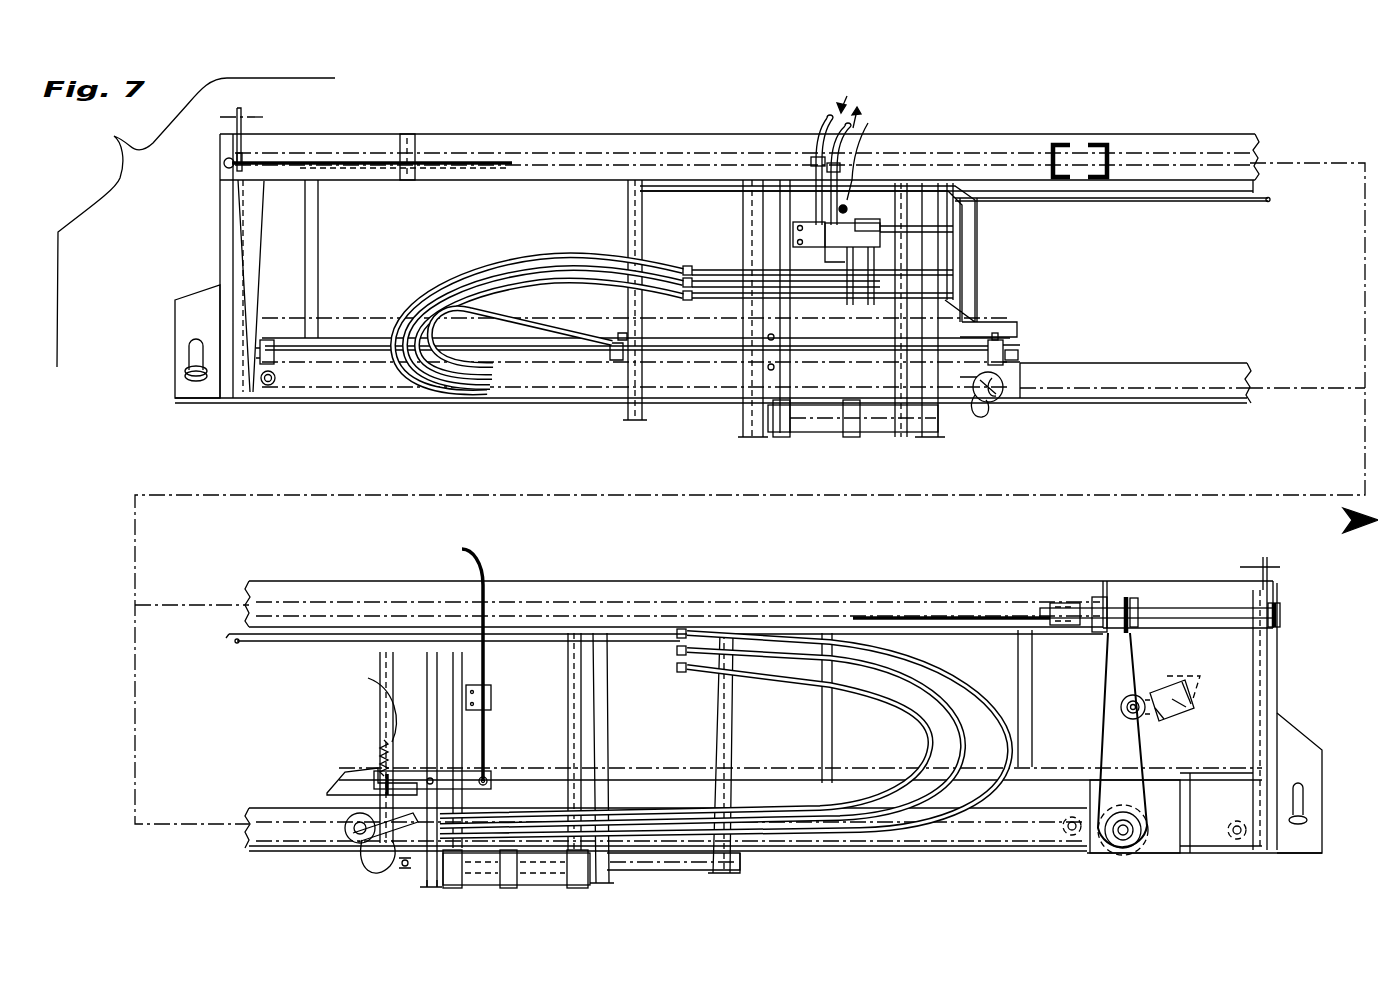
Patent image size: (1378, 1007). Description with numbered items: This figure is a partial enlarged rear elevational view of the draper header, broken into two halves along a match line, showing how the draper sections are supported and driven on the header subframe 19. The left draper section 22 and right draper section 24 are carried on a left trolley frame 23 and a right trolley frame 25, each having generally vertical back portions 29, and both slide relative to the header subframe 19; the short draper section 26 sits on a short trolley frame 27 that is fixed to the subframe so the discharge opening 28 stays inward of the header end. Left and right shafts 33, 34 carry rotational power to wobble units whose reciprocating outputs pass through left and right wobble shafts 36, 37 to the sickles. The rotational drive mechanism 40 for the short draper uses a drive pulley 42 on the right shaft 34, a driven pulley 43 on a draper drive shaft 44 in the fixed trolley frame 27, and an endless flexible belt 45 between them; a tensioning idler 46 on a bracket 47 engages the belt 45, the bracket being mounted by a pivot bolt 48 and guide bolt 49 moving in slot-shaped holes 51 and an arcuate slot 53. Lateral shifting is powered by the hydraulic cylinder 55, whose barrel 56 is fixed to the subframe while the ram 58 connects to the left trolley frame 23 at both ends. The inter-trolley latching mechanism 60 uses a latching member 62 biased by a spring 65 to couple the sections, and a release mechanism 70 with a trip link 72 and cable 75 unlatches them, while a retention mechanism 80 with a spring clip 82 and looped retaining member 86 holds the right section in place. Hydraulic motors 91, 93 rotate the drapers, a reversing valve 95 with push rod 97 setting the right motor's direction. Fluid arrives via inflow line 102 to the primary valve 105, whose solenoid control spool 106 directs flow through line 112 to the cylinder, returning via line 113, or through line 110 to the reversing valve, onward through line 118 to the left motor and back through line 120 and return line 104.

The header subframe 19 is at (1145, 363).
The left draper section 22 is at (998, 253).
The left trolley frame 23 is at (315, 218).
The right draper section 24 is at (310, 697).
The right trolley frame 25 is at (1026, 640).
The short draper section 26 is at (1174, 565).
The short trolley frame 27 is at (1215, 855).
The discharge opening 28 is at (702, 505).
The vertical back portions 29 is at (762, 486).
The left shaft 33 is at (275, 160).
The right shaft 34 is at (1160, 600).
The left wobble shaft 36 is at (192, 340).
The right wobble shaft 37 is at (1302, 797).
The rotational drive mechanism 40 is at (1042, 880).
The drive pulley 42 is at (1123, 597).
The driven pulley 43 is at (1100, 855).
The draper drive shaft 44 is at (1123, 848).
The endless flexible belt 45 is at (1132, 668).
The tensioning idler 46 is at (1134, 720).
The bracket 47 is at (1162, 692).
The pivot bolt 48 is at (1164, 720).
The guide bolt 49 is at (1188, 710).
The slot-shaped holes 51 is at (1192, 680).
The arcuate slot 53 is at (1197, 695).
The hydraulic cylinder 55 is at (608, 360).
The barrel 56 is at (730, 355).
The ram 58 is at (1018, 350).
The inter-trolley latching mechanism 60 is at (218, 770).
The latching member 62 is at (340, 788).
The spring 65 is at (382, 748).
The release mechanism 70 is at (491, 768).
The trip link 72 is at (486, 790).
The cable 75 is at (489, 672).
The retention mechanism 80 is at (406, 902).
The spring clip 82 is at (402, 870).
The looped retaining member 86 is at (426, 888).
The hydraulic motor 91 is at (996, 410).
The hydraulic motor 93 is at (362, 858).
The reversing valve 95 is at (365, 702).
The push rod 97 is at (345, 828).
The inflow line 102 is at (820, 124).
The return line 104 is at (847, 132).
The primary valve 105 is at (800, 230).
The solenoid control spool 106 is at (862, 188).
The line 110 is at (1256, 191).
The line 112 is at (978, 300).
The line 113 is at (710, 300).
The line 118 is at (1266, 201).
The line 120 is at (586, 284).